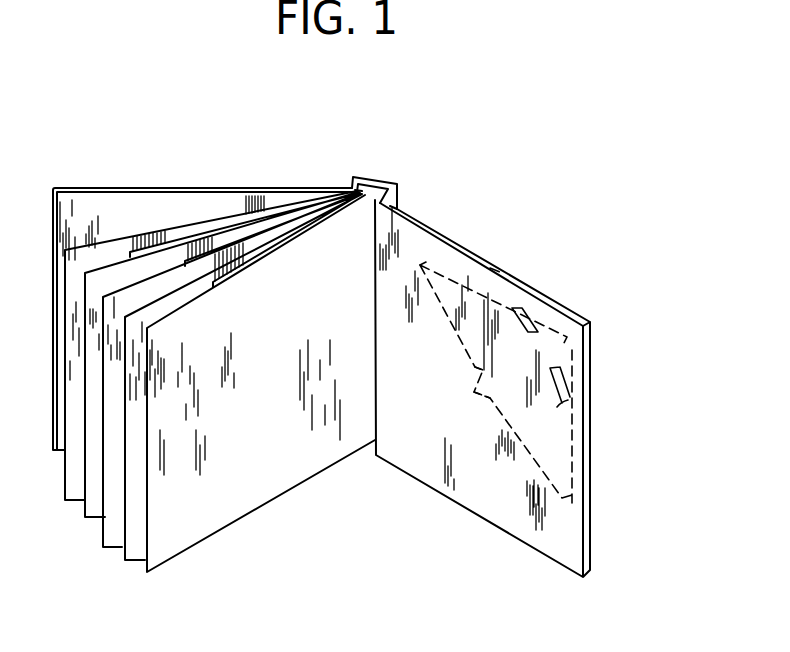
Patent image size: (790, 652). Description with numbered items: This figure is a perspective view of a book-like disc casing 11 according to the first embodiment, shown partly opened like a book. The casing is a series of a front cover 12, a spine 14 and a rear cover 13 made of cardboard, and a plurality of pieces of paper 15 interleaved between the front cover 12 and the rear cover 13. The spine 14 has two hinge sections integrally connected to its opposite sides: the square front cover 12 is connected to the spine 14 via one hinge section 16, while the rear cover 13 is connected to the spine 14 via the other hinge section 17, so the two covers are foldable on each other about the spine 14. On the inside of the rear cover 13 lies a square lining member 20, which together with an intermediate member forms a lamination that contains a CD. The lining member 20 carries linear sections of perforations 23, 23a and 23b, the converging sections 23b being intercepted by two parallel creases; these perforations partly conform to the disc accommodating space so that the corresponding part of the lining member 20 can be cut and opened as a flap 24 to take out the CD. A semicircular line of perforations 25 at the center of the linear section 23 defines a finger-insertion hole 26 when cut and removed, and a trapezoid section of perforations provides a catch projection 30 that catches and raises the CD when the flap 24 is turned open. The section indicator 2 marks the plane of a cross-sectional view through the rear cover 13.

The book-like disc casing 11 is at (226, 152).
The front cover 12 is at (115, 188).
The rear cover 13 is at (544, 296).
The spine 14 is at (377, 182).
The pieces of paper 15 is at (95, 514).
The hinge section 16 is at (367, 193).
The hinge section 17 is at (398, 207).
The lining member 20 is at (577, 540).
The linear section of perforations 23 is at (457, 333).
The linear section of perforations 23a is at (420, 263).
The converging linear sections of perforations 23b is at (498, 271).
The flap 24 is at (572, 406).
The semicircular line of perforations 25 is at (477, 388).
The finger-insertion hole 26 is at (490, 392).
The catch projection 30 is at (568, 350).
The section line II-II 2 is at (483, 250).